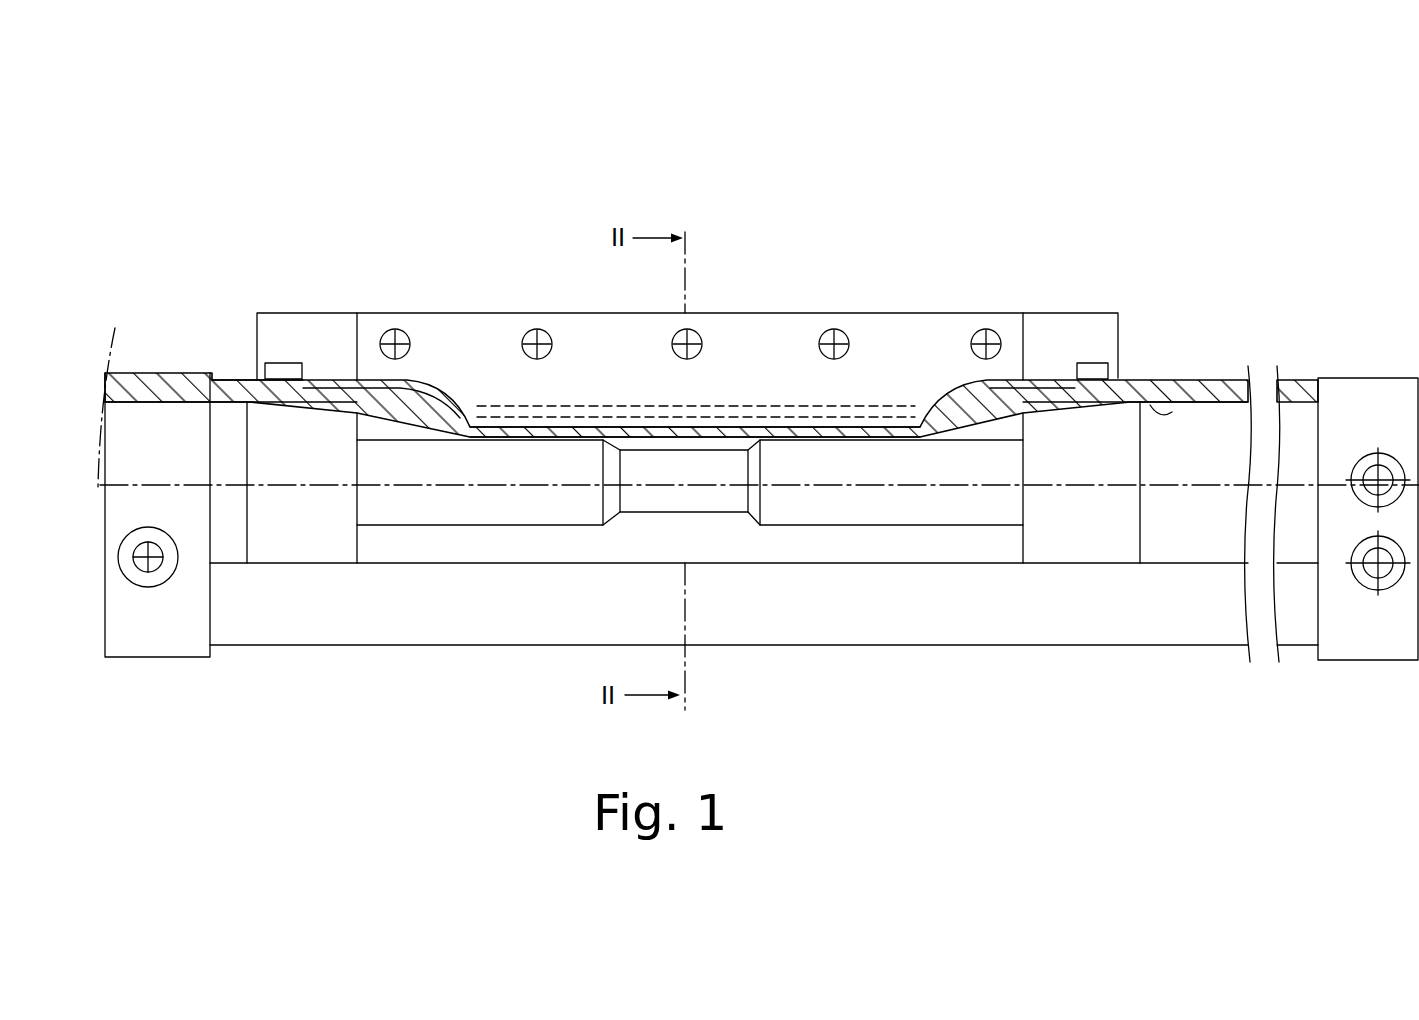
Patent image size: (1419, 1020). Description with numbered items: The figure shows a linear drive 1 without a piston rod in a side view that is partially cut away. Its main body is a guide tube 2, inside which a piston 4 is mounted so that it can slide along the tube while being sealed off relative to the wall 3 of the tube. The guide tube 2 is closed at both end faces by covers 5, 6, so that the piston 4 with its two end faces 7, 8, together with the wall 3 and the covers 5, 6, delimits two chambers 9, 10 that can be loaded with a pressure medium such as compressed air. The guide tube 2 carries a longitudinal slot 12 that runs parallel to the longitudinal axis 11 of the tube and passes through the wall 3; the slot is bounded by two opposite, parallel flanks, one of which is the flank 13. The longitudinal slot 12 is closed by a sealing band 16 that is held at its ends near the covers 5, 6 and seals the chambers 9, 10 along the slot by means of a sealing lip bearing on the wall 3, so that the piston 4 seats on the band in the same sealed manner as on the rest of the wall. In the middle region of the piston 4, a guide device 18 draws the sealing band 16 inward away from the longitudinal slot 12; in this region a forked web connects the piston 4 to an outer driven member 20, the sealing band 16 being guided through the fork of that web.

The linear drive 1 is at (1128, 185).
The guide tube 2 is at (278, 621).
The wall 3 is at (1224, 521).
The piston 4 is at (820, 503).
The cover 5 is at (147, 630).
The cover 6 is at (1370, 635).
The end face 7 is at (245, 423).
The end face 8 is at (1178, 390).
The chamber 9 is at (235, 530).
The chamber 10 is at (1303, 460).
The longitudinal axis 11 is at (117, 393).
The longitudinal slot 12 is at (1130, 371).
The flank 13 is at (372, 390).
The sealing band 16 is at (1215, 392).
The guide device 18 is at (493, 418).
The outer driven member 20 is at (905, 345).